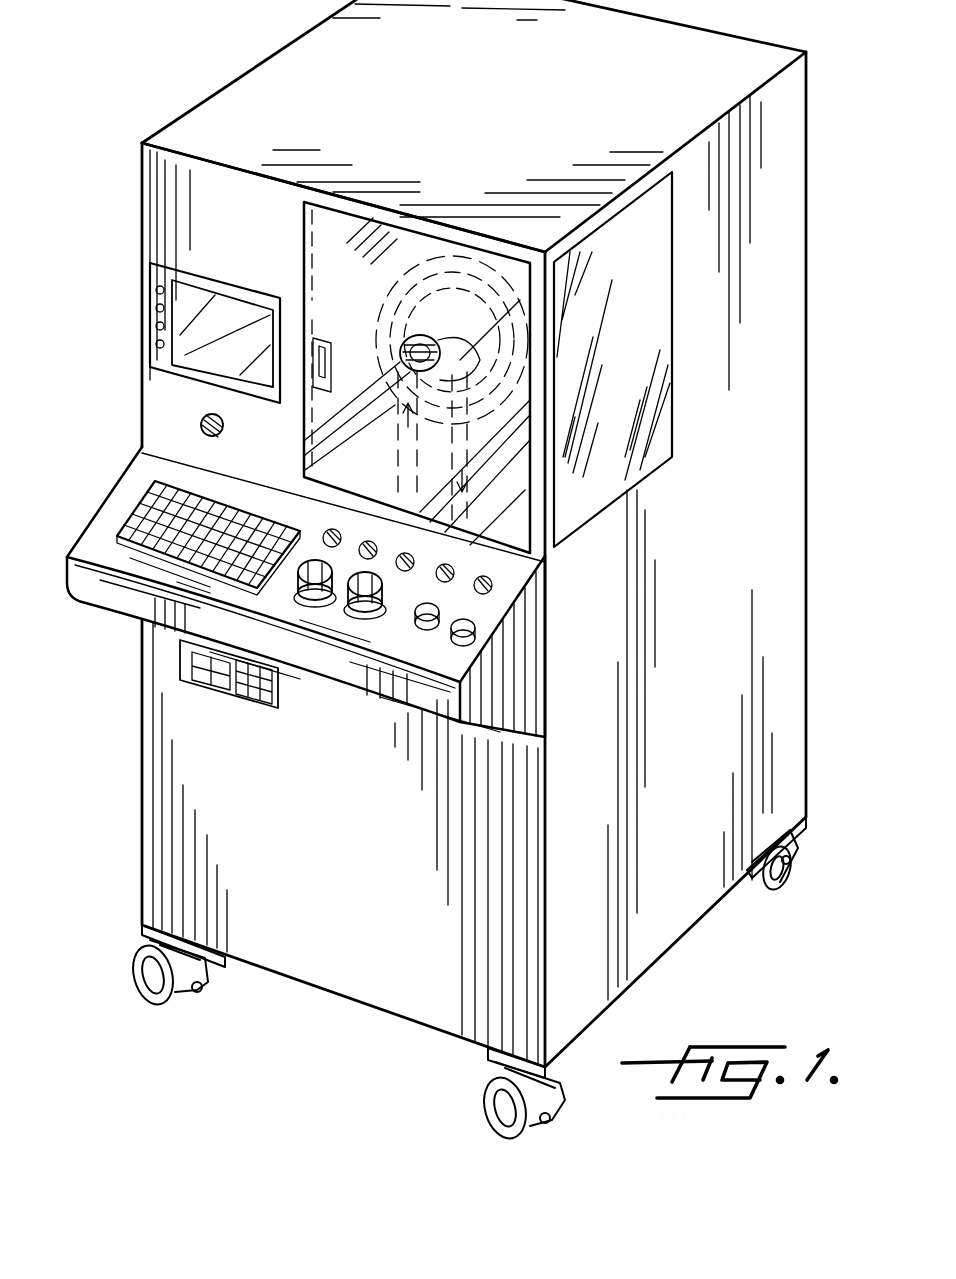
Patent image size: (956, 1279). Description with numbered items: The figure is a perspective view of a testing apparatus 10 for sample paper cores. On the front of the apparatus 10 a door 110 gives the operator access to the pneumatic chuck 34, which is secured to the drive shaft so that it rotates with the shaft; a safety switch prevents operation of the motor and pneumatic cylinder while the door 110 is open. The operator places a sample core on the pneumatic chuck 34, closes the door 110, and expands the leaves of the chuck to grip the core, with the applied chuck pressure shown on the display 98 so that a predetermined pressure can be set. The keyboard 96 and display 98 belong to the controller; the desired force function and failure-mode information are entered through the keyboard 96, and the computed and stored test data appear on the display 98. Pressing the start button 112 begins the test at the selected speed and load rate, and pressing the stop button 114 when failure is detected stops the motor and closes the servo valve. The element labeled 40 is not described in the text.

The testing apparatus 10 is at (845, 78).
The pneumatic chuck 34 is at (385, 296).
The spool 40 is at (432, 250).
The keyboard 96 is at (163, 522).
The display 98 is at (215, 320).
The door 110 is at (310, 415).
The start button 112 is at (315, 595).
The stop button 114 is at (365, 606).